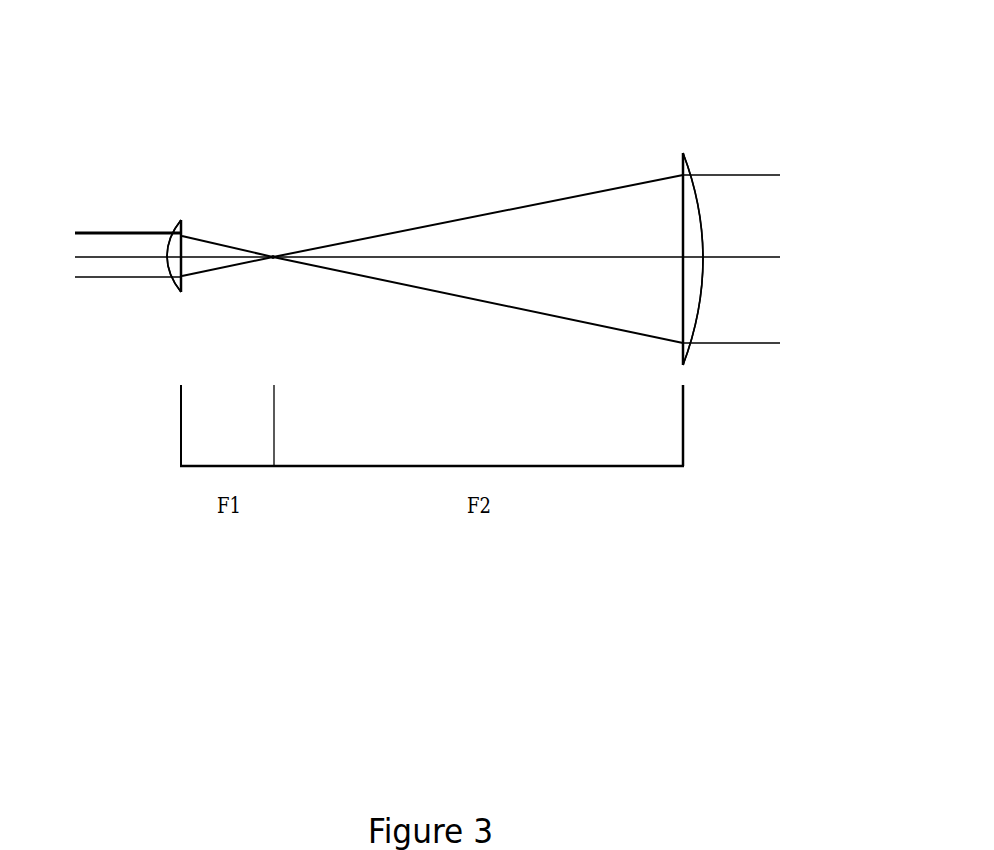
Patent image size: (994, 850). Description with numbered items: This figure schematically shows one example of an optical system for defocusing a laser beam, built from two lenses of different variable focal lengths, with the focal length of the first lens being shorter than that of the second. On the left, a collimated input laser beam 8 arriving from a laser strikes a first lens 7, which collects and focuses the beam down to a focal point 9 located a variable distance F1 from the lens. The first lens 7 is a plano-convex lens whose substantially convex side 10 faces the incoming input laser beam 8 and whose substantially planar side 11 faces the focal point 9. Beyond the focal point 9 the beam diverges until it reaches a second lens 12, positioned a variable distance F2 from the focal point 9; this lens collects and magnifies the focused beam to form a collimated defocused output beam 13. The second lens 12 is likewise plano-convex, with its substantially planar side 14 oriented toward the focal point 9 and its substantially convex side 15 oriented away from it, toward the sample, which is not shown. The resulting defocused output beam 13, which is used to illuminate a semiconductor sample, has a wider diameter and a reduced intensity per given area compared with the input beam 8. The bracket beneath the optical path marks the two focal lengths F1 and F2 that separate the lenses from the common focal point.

The first lens 7 is at (179, 193).
The collimated input laser beam 8 is at (404, 255).
The focal point 9 is at (274, 259).
The substantially convex side 10 is at (170, 278).
The substantially planar side 11 is at (182, 227).
The second lens 12 is at (683, 138).
The collimated defocused output beam 13 is at (761, 259).
The substantially planar side 14 is at (680, 298).
The substantially convex side 15 is at (702, 203).